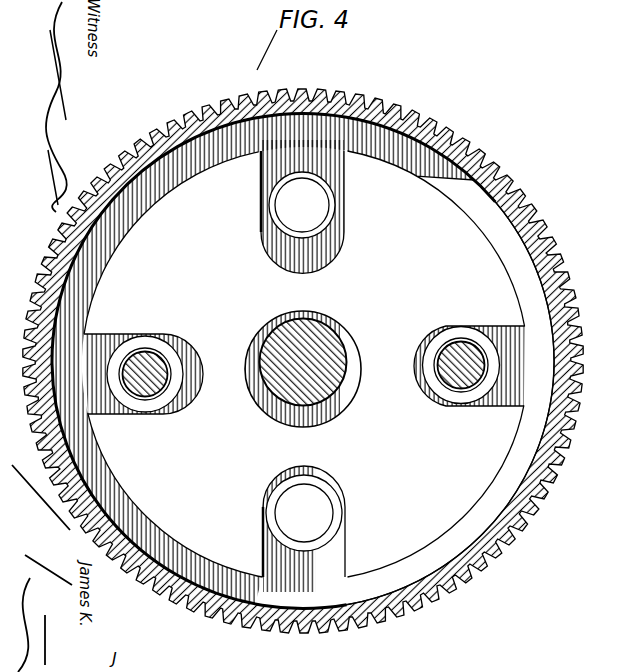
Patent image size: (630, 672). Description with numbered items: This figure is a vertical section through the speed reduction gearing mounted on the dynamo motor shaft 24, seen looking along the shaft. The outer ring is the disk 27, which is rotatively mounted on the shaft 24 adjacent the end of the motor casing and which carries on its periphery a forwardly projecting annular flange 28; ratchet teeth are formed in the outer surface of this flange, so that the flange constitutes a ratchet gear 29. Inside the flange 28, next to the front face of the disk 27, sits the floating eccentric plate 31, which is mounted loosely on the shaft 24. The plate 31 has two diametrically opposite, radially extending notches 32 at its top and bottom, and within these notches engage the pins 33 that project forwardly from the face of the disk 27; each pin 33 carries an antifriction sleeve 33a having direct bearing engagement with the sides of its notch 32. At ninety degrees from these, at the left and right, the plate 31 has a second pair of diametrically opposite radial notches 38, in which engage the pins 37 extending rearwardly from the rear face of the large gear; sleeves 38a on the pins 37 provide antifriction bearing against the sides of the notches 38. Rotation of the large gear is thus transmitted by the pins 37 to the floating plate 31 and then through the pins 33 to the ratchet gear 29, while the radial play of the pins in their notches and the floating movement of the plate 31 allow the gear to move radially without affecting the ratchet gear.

The dynamo motor shaft 24 is at (314, 338).
The disk 27 is at (498, 220).
The annular flange 28 is at (181, 127).
The ratchet gear 29 is at (377, 102).
The floating eccentric plate 31 is at (445, 201).
The radially extending notch 32 is at (345, 181).
The pin 33 is at (290, 208).
The antifriction sleeve 33a is at (336, 208).
The pin 37 is at (148, 392).
The radially extending notch 38 is at (108, 333).
The sleeve 38a is at (166, 344).